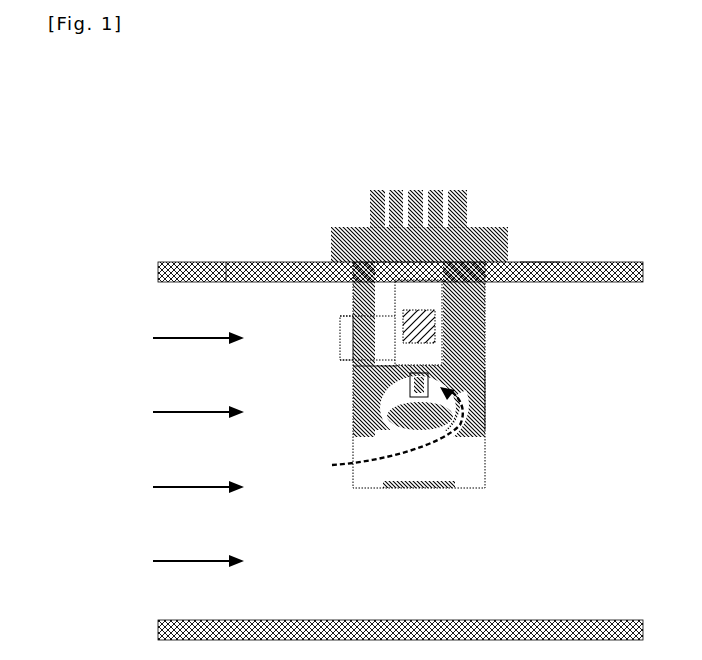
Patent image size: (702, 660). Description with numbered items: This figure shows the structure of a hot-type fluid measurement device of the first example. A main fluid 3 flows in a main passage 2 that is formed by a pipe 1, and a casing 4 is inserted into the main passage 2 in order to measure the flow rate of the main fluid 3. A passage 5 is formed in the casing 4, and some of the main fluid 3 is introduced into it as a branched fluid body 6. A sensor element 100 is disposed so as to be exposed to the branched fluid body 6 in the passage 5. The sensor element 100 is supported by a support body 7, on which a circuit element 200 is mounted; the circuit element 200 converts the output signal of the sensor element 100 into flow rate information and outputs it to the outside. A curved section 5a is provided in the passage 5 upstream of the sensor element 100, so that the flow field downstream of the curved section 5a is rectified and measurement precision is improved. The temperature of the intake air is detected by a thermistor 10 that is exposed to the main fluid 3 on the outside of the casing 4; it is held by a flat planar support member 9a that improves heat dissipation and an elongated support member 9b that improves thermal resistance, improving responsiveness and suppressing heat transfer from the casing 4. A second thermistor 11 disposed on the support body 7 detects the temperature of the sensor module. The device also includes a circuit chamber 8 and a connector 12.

The pipe 1 is at (163, 262).
The main passage 2 is at (238, 300).
The main fluid 3 is at (177, 413).
The casing 4 is at (473, 175).
The passage 5 is at (383, 474).
The curved section 5a is at (447, 392).
The branched fluid body 6 is at (386, 424).
The support body 7 is at (487, 362).
The circuit chamber 8 is at (535, 265).
The support member 9a is at (352, 316).
The support member 9b is at (353, 323).
The thermistor 10 is at (345, 340).
The thermistor 11 is at (350, 383).
The connector 12 is at (455, 181).
The sensor element 100 is at (485, 398).
The circuit element 200 is at (436, 318).